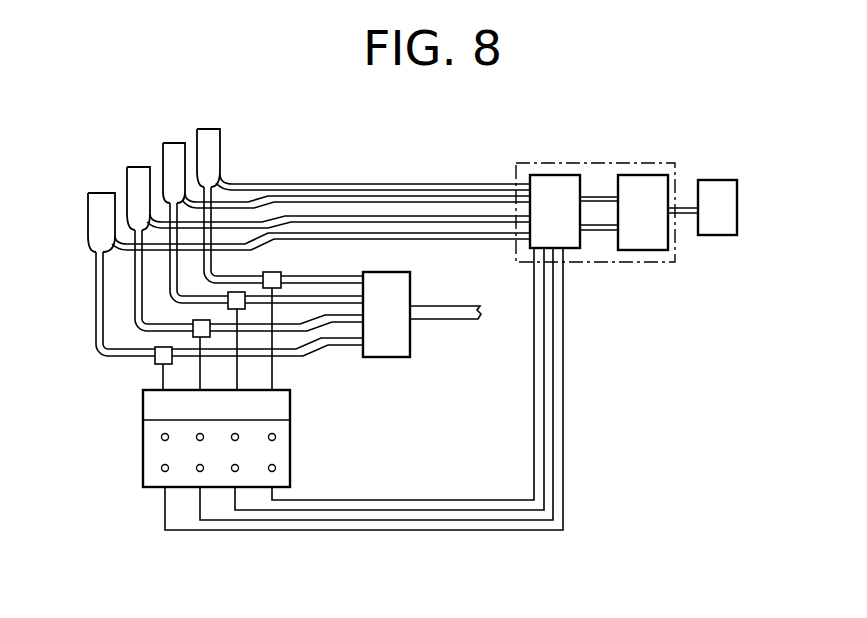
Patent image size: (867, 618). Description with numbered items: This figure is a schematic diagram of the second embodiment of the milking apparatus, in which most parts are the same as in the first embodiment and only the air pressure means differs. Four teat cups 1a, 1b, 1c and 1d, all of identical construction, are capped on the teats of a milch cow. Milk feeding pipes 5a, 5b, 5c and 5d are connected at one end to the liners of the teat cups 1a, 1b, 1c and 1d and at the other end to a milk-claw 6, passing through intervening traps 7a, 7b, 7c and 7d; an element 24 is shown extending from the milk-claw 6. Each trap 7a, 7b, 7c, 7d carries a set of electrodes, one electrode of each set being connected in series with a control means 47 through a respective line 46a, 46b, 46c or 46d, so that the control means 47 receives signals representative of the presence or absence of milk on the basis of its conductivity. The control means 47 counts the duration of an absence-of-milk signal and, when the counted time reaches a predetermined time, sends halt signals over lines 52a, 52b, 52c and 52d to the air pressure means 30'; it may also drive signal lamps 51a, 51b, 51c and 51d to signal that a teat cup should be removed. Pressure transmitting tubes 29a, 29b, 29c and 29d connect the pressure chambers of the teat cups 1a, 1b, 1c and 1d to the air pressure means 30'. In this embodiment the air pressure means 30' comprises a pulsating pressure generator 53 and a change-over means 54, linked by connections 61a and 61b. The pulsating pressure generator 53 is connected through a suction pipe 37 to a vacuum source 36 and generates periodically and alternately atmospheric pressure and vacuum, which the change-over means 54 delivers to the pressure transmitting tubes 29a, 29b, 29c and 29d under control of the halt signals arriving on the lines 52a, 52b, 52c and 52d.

The teat cup 1a is at (207, 132).
The teat cup 1b is at (172, 145).
The teat cup 1c is at (137, 170).
The teat cup 1d is at (98, 195).
The pressure transmitting tube 29a is at (303, 182).
The pressure transmitting tube 29b is at (350, 197).
The pressure transmitting tube 29c is at (405, 217).
The pressure transmitting tube 29d is at (461, 232).
The milk feeding pipe 5a is at (350, 280).
The milk feeding pipe 5b is at (337, 298).
The milk feeding pipe 5c is at (342, 323).
The milk feeding pipe 5d is at (348, 345).
The trap 7a is at (281, 274).
The trap 7b is at (229, 297).
The trap 7c is at (194, 325).
The trap 7d is at (156, 352).
The line 46a is at (272, 378).
The line 46b is at (238, 367).
The line 46c is at (200, 378).
The line 46d is at (162, 373).
The control means 47 is at (155, 450).
The signal lamp 51a is at (276, 468).
The signal lamp 51b is at (233, 476).
The signal lamp 51c is at (199, 475).
The signal lamp 51d is at (161, 468).
The line 52a is at (348, 503).
The line 52b is at (400, 512).
The line 52c is at (452, 522).
The line 52d is at (513, 532).
The milk-claw 6 is at (402, 330).
The drive shaft 24 is at (450, 306).
The air pressure means 30' is at (595, 248).
The change-over means 54 is at (550, 180).
The pulsating pressure generator 53 is at (643, 183).
The vacuum source 36 is at (717, 188).
The signal line 61a is at (597, 194).
The signal line 61b is at (600, 232).
The suction pipe 37 is at (690, 216).